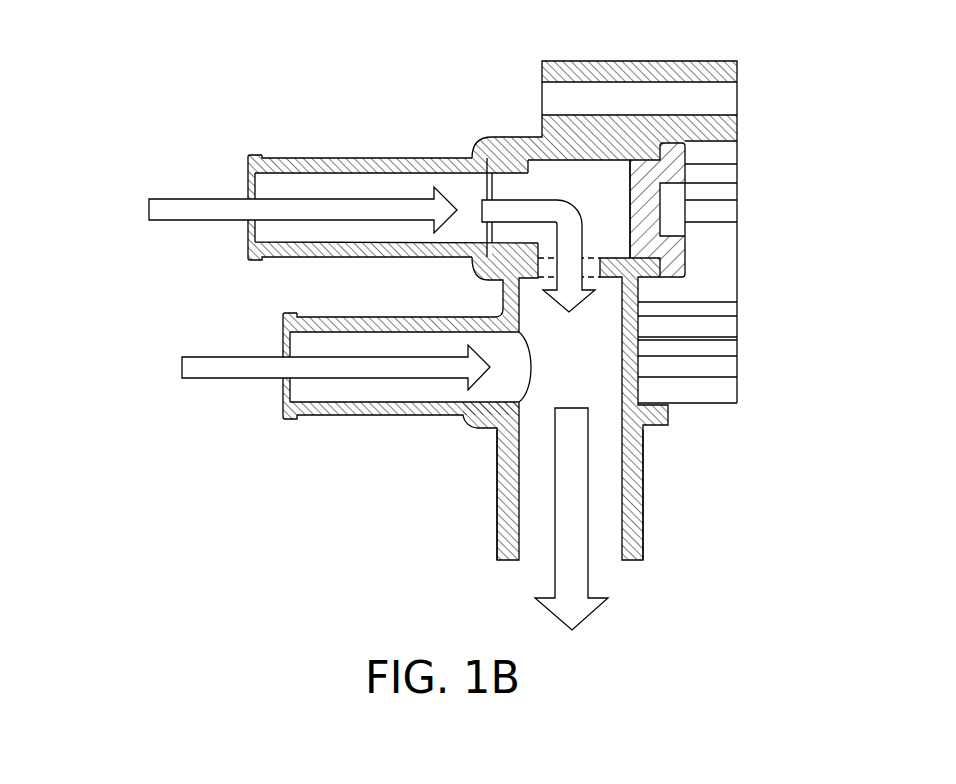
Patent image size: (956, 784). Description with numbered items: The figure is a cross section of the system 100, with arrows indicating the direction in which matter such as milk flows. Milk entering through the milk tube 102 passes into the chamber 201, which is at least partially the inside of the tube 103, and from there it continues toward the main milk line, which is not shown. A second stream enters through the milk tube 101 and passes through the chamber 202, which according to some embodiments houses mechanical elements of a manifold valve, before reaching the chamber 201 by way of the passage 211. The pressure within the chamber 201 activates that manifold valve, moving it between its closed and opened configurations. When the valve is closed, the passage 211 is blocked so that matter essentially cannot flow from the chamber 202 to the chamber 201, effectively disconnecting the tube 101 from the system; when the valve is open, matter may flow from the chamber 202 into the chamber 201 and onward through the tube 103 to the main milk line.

The system 100 is at (483, 322).
The milk tube 101 is at (327, 160).
The milk tube 102 is at (323, 405).
The tube 103 is at (642, 498).
The chamber 201 is at (588, 340).
The chamber 202 is at (593, 177).
The passage 211 is at (587, 270).